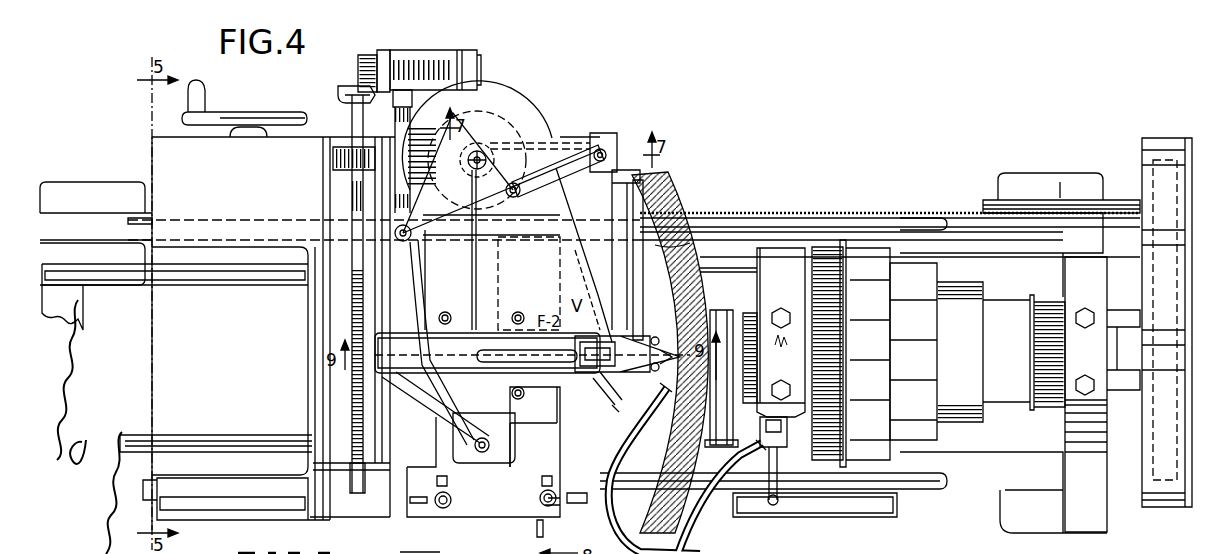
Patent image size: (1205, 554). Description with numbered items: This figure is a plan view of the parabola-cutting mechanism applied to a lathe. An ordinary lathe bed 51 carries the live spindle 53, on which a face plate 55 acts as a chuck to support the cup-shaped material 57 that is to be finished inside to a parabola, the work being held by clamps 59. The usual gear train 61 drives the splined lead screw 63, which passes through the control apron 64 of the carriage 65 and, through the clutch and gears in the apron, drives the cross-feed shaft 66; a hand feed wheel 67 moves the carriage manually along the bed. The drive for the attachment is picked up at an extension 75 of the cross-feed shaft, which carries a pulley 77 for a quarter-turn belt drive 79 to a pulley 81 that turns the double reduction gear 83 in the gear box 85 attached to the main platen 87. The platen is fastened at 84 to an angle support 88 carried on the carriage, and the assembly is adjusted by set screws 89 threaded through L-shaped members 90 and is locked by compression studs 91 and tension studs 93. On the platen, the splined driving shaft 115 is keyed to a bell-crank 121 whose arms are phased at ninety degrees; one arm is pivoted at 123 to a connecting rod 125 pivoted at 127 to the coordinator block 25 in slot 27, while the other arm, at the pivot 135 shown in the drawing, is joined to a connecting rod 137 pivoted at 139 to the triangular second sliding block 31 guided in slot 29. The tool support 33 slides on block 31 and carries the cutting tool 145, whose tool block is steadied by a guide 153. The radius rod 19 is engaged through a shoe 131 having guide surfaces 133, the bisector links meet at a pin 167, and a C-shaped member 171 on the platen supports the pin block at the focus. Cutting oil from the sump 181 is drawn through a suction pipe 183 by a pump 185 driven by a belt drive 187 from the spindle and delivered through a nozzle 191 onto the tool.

The radius rod 19 is at (595, 200).
The coordinator block 25 is at (580, 143).
The right-angular slot 27 is at (552, 150).
The right-angular slot 29 is at (490, 288).
The second sliding block 31 is at (412, 400).
The tool support 33 is at (410, 385).
The lathe bed 51 is at (110, 280).
The live spindle 53 is at (862, 250).
The face plate 55 is at (683, 215).
The material 57 is at (640, 337).
The holding clamps 59 is at (638, 225).
The gear train 61 is at (1155, 230).
The lead screw 63 is at (142, 215).
The control apron 64 is at (178, 140).
The carriage 65 is at (308, 405).
The cross-feed shaft 66 is at (350, 198).
The hand feed wheel 67 is at (258, 112).
The extension 75 is at (352, 120).
The pulley 77 is at (342, 103).
The quarter-turn belt drive 79 is at (360, 70).
The pulley 81 is at (380, 52).
The double reduction gear 83 is at (440, 52).
The fastening 84 is at (445, 312).
The gear box 85 is at (395, 125).
The main platen 87 is at (510, 275).
The angle support 88 is at (478, 515).
The set screws 89 is at (445, 188).
The L-shaped members 90 is at (541, 500).
The locking and elevating studs 91 is at (437, 484).
The locking and elevating studs 93 is at (440, 510).
The driving shaft 115 is at (478, 150).
The bell-crank 121 is at (490, 218).
The pivot 123 is at (518, 195).
The connecting rod 125 is at (522, 152).
The pivot 127 is at (608, 150).
The shoe 131 is at (612, 133).
The guide surfaces 133 is at (420, 550).
The pivot 135 is at (395, 238).
The connecting rod 137 is at (416, 310).
The pivot 139 is at (483, 452).
The tool 145 is at (655, 340).
The guide 153 is at (615, 408).
The pin 167 is at (597, 320).
The C-shaped member 171 is at (556, 390).
The oil sump 181 is at (810, 517).
The suction pipe 183 is at (768, 503).
The pump 185 is at (780, 448).
The belt drive 187 is at (740, 372).
The nozzle 191 is at (655, 420).